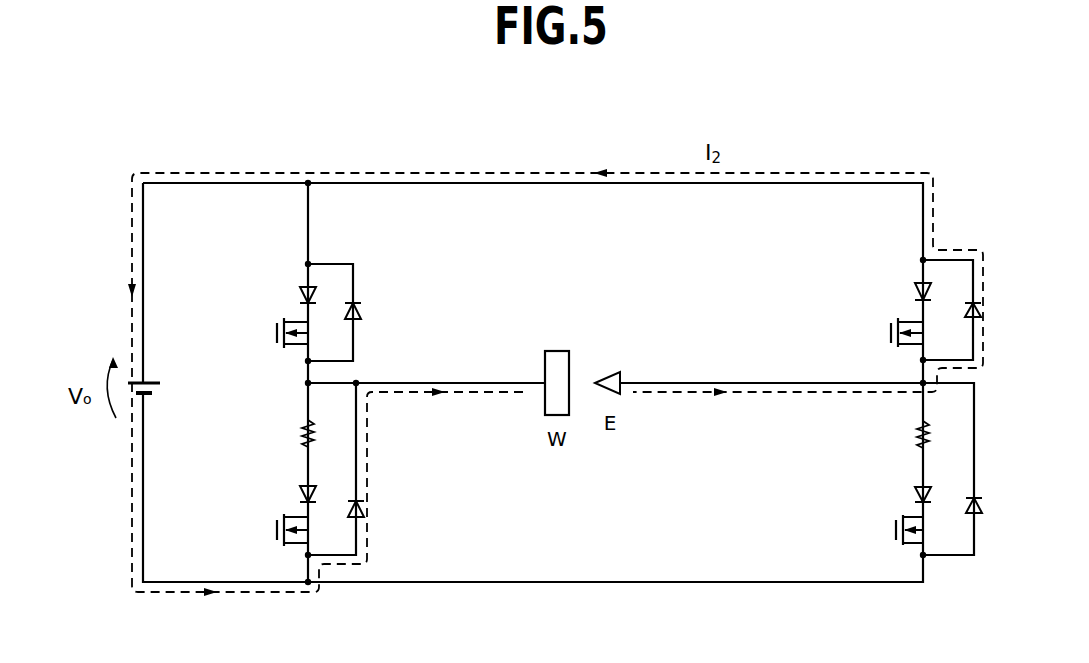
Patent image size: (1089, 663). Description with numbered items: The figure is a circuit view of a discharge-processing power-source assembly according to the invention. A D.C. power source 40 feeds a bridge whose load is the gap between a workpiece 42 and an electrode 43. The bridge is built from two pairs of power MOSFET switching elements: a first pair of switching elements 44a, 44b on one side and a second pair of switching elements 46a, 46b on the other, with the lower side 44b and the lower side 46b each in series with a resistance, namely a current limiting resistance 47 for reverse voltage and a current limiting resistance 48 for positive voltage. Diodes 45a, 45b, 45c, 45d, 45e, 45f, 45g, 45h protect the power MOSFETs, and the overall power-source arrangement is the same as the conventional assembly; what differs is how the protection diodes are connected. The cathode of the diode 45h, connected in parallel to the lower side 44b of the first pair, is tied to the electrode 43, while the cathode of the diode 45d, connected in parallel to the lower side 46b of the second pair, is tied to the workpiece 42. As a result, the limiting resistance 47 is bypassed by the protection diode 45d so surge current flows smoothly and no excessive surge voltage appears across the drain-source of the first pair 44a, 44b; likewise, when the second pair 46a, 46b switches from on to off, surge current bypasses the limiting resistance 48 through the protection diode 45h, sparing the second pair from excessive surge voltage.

The D.C. power source 40 is at (150, 378).
The workpiece 42 is at (556, 349).
The electrode 43 is at (620, 368).
The first pair of switching elements (upper side) 44a is at (271, 326).
The first pair of switching elements (lower side) 44b is at (885, 530).
The diode 45a is at (297, 289).
The diode 45b is at (365, 308).
The diode 45c is at (297, 498).
The protection diode 45d is at (373, 508).
The diode 45e is at (908, 290).
The diode 45f is at (985, 307).
The diode 45g is at (910, 495).
The protection diode 45h is at (985, 505).
The second pair of switching elements (upper side) 46a is at (888, 332).
The second pair of switching elements (lower side) 46b is at (270, 537).
The current limiting resistance for reverse voltage 47 is at (298, 436).
The current limiting resistance for positive voltage 48 is at (912, 435).